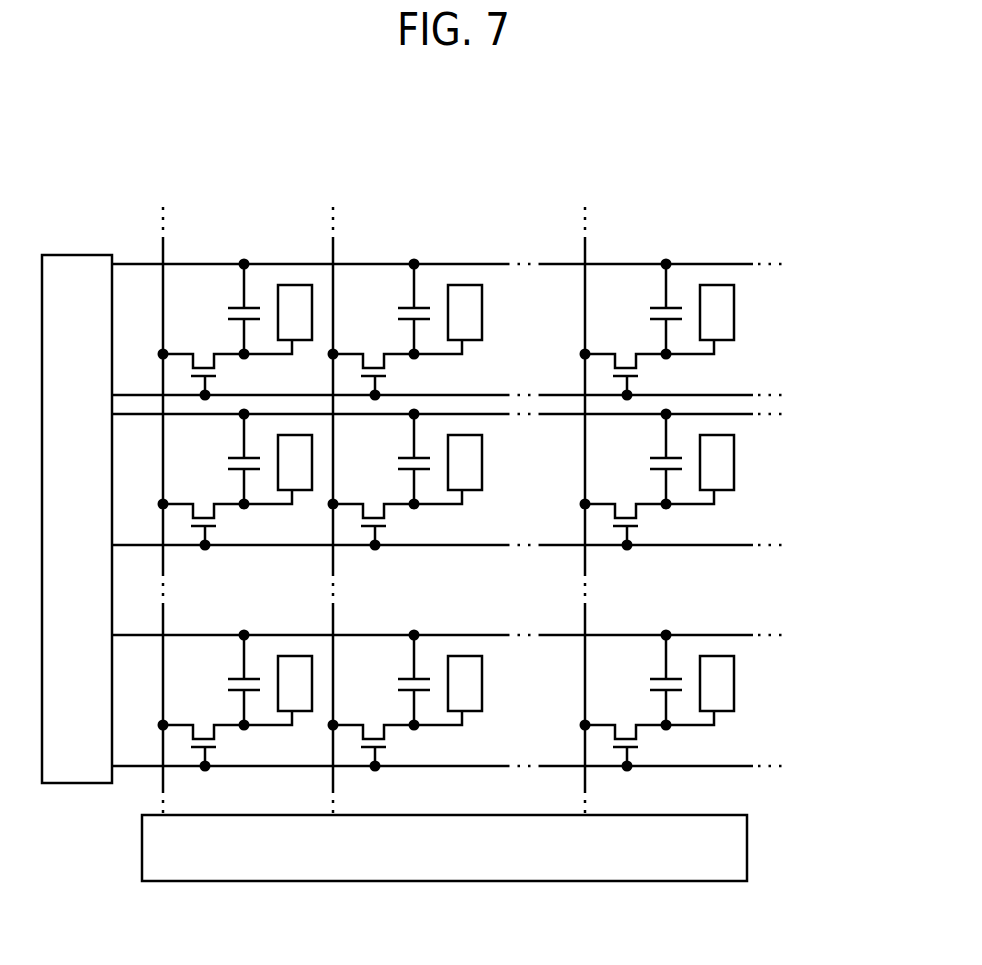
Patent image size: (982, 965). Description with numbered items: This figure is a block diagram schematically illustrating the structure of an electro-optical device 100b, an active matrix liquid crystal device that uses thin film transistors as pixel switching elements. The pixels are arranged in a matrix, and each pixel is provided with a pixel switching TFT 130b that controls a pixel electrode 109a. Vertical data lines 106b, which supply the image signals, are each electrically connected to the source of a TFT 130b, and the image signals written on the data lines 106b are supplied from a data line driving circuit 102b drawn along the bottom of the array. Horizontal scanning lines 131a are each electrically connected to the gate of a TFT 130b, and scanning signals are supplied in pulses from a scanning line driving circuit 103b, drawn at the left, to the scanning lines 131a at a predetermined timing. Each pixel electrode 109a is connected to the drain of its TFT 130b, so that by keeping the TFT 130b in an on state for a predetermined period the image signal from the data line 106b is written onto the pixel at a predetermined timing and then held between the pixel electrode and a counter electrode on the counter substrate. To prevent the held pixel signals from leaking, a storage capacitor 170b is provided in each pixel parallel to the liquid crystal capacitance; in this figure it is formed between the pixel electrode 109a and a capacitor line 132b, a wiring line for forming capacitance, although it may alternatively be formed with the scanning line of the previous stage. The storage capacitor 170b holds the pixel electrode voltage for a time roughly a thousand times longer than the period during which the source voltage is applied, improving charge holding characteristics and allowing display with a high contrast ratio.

The electro-optical device 100b is at (787, 210).
The data line driving circuit 102b is at (695, 875).
The scanning line driving circuit 103b is at (58, 775).
The data line 106b is at (165, 240).
The pixel electrode 109a is at (299, 297).
The pixel switching TFT 130b is at (218, 364).
The scanning line 131a is at (757, 395).
The capacitor line 132b is at (753, 264).
The storage capacitor 170b is at (228, 312).